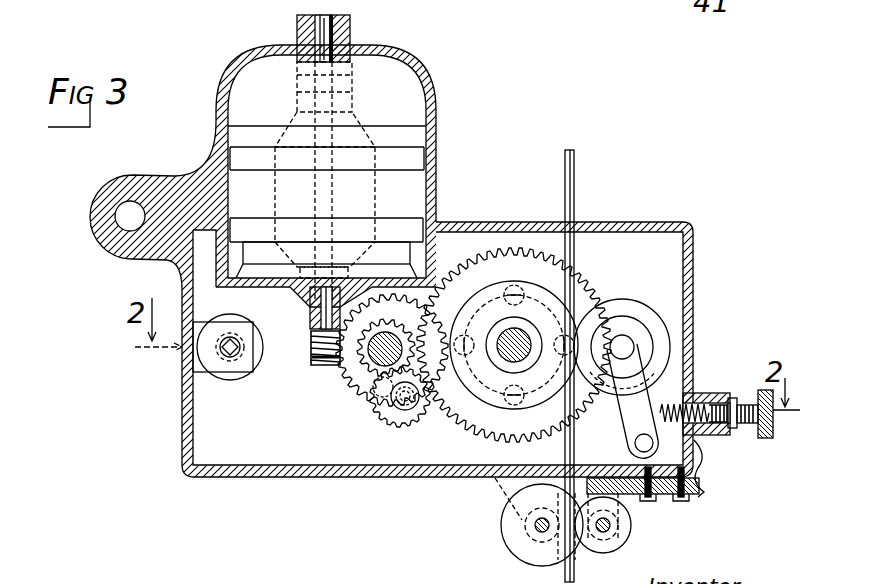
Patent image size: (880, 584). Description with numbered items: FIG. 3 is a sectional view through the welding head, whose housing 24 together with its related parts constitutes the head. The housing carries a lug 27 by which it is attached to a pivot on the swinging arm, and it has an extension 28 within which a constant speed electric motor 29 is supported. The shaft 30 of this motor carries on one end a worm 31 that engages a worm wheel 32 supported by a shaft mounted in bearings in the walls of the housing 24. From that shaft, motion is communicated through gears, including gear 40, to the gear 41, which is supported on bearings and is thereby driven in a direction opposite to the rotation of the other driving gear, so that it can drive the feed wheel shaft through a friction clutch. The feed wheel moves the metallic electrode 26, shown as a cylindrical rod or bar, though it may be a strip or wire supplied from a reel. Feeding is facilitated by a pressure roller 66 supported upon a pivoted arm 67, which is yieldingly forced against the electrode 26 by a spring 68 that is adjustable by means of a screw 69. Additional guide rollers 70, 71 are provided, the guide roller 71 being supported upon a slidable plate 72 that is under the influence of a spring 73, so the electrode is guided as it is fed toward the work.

The housing 24 is at (285, 478).
The metallic electrode 26 is at (574, 175).
The lug 27 is at (95, 205).
The extension 28 is at (436, 100).
The electric motor 29 is at (362, 122).
The shaft 30 is at (350, 28).
The worm 31 is at (312, 358).
The worm wheel 32 is at (343, 370).
The gear 40 is at (394, 426).
The gear 41 is at (458, 412).
The pressure roller 66 is at (622, 329).
The pivoted arm 67 is at (622, 410).
The spring 68 is at (696, 398).
The screw 69 is at (750, 404).
The guide roller 70 is at (508, 535).
The guide roller 71 is at (628, 533).
The slidable plate 72 is at (668, 498).
The spring 73 is at (706, 474).